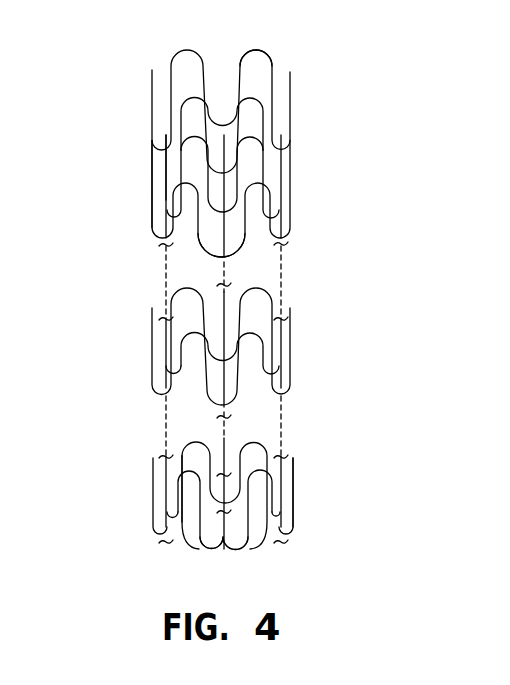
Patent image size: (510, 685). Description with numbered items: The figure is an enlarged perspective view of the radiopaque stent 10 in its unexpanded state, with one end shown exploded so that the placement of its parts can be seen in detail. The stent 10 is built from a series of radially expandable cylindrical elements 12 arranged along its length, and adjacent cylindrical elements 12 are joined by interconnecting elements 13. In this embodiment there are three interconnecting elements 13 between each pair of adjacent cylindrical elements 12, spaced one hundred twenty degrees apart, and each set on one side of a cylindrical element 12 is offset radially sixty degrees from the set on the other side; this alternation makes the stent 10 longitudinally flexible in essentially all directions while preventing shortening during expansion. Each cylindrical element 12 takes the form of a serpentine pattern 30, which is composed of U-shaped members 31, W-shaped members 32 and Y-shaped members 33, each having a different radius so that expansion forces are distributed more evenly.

The stent 10 is at (215, 306).
The radially expandable cylindrical element 12 is at (288, 142).
The interconnecting element 13 is at (290, 300).
The serpentine pattern 30 is at (141, 204).
The U-shaped member 31 is at (262, 52).
The W-shaped member 32 is at (200, 253).
The Y-shaped member 33 is at (163, 178).